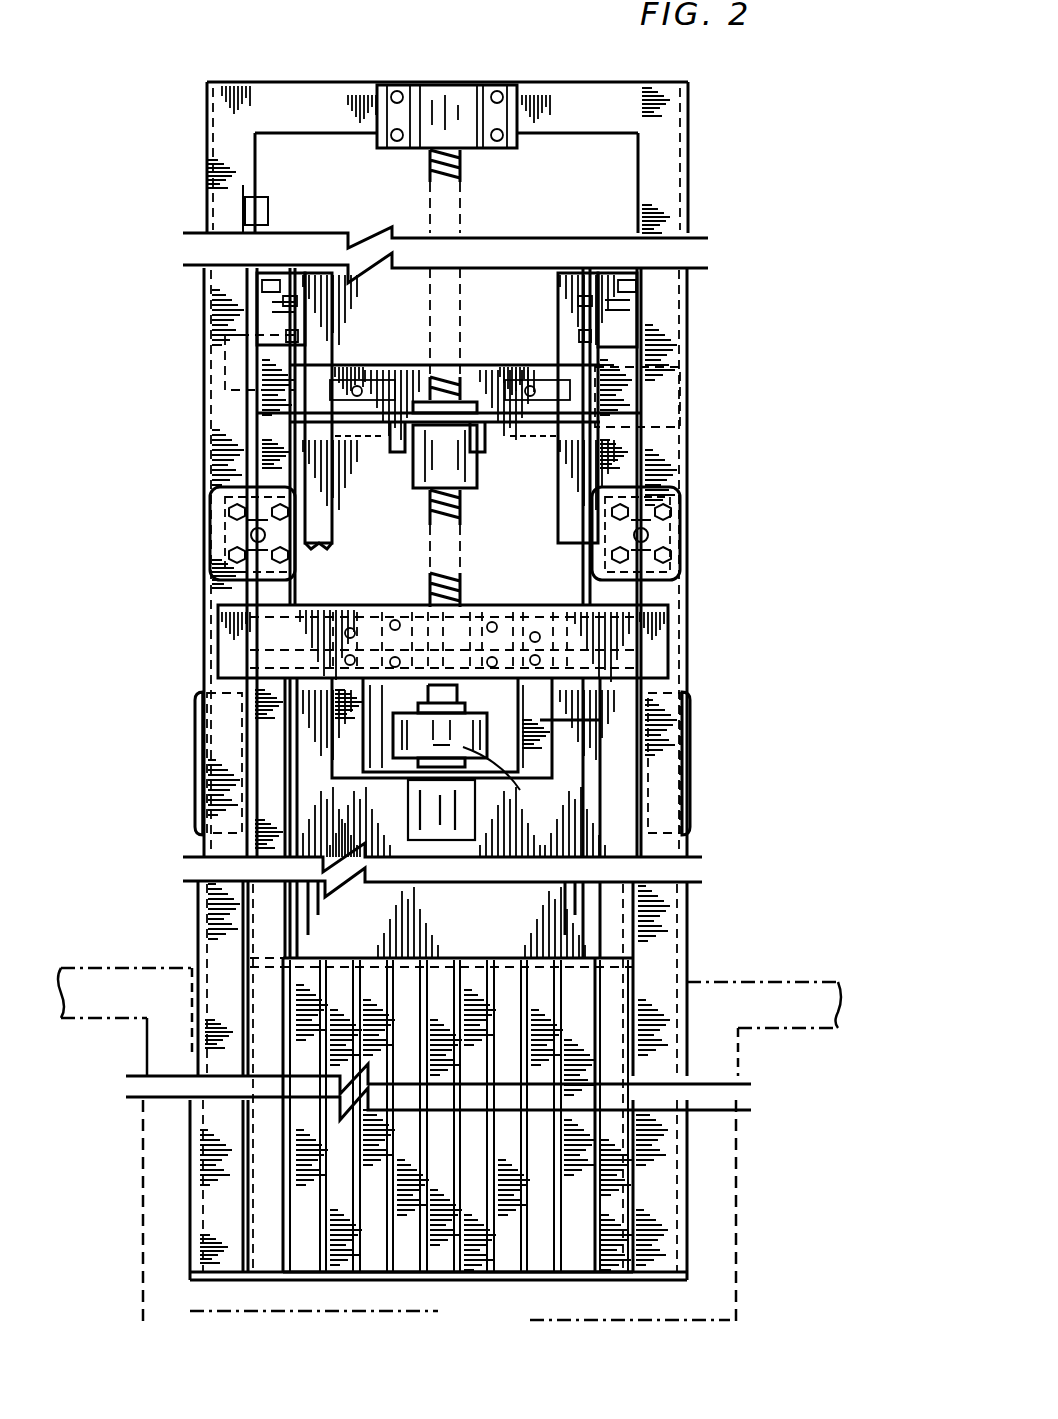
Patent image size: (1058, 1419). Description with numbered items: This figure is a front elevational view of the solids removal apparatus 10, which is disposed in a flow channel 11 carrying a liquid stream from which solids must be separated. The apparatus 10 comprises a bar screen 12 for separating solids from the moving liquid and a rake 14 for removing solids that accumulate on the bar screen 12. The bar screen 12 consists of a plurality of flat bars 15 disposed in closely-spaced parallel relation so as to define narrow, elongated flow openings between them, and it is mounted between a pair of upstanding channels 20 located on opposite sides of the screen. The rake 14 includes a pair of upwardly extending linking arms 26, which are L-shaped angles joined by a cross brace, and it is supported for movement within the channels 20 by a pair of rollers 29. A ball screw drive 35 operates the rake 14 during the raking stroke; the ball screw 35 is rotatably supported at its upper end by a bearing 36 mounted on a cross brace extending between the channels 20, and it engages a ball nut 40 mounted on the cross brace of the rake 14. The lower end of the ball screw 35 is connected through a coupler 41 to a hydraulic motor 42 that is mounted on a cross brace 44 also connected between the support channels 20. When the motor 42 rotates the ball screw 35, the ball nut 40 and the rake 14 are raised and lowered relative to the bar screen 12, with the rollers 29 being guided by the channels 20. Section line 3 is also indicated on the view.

The section line 3- 3 is at (437, 47).
The solids removal apparatus 10 is at (722, 411).
The flow channel 11 is at (802, 972).
The bar screen 12 is at (565, 1035).
The rake 14 is at (265, 795).
The flat bars 15 is at (436, 1248).
The upstanding channels 20 is at (668, 190).
The linking arms 26 is at (270, 472).
The rollers 29 is at (690, 327).
The ball screw drive 35 is at (462, 172).
The bearing 36 is at (433, 138).
The ball nut 40 is at (433, 485).
The coupler 41 is at (508, 784).
The hydraulic motor 42 is at (435, 820).
The cross brace 44 is at (583, 690).